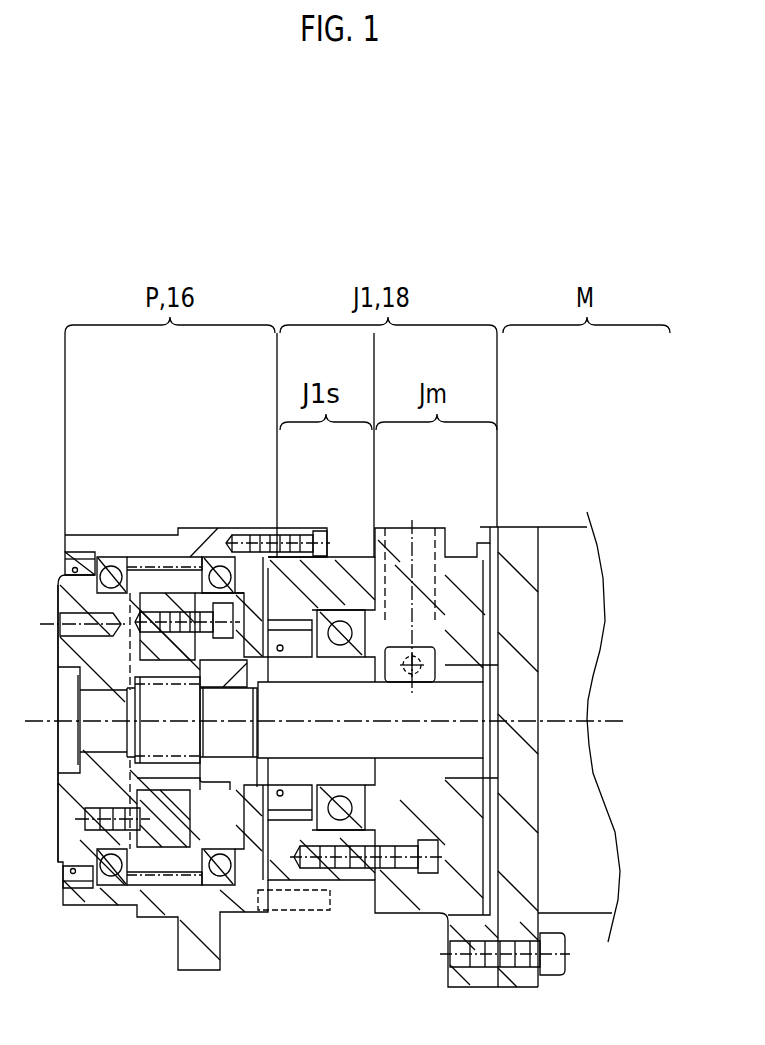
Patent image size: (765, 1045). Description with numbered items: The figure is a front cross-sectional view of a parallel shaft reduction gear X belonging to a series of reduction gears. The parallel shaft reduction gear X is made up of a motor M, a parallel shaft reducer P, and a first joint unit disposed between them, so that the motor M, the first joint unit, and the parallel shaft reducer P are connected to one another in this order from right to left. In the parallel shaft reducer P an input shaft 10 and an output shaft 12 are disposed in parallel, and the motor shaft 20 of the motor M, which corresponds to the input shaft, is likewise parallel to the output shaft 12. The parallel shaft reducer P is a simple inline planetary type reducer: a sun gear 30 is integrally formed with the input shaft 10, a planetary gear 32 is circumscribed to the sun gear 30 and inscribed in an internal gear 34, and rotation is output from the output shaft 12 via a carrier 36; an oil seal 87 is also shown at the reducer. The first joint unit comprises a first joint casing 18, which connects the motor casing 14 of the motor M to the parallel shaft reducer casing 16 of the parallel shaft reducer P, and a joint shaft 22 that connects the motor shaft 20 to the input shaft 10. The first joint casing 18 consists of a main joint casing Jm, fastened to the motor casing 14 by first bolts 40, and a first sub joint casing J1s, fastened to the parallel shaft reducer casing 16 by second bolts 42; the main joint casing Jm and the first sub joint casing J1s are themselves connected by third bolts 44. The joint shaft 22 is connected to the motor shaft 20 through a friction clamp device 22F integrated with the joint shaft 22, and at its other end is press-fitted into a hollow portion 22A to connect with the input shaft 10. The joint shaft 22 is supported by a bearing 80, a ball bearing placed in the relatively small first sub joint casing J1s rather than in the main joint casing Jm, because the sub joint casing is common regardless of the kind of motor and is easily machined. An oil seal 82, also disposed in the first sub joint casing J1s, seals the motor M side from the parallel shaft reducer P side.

The input shaft 10 is at (233, 740).
The output shaft 12 is at (65, 790).
The motor casing 14 is at (548, 540).
The parallel shaft reducer casing 16 is at (157, 603).
The first joint casing 18 is at (433, 525).
The motor shaft 20 is at (480, 668).
The joint shaft 22 is at (300, 770).
The hollow portion 22A is at (125, 870).
The friction clamp device 22F is at (425, 655).
The sun gear 30 is at (150, 740).
The planetary gear 32 is at (168, 880).
The internal gear 34 is at (180, 875).
The carrier 36 is at (162, 608).
The first bolt 40 is at (553, 976).
The second bolt 42 is at (318, 530).
The third bolt 44 is at (428, 846).
The bearing 80 is at (345, 810).
The oil seal 82 is at (283, 822).
The oil seal 87 is at (65, 562).
The parallel shaft reducer P is at (200, 526).
The motor M is at (578, 556).
The parallel shaft reduction gear X is at (446, 265).
The first sub joint casing J1s is at (352, 568).
The main joint casing Jm is at (460, 545).